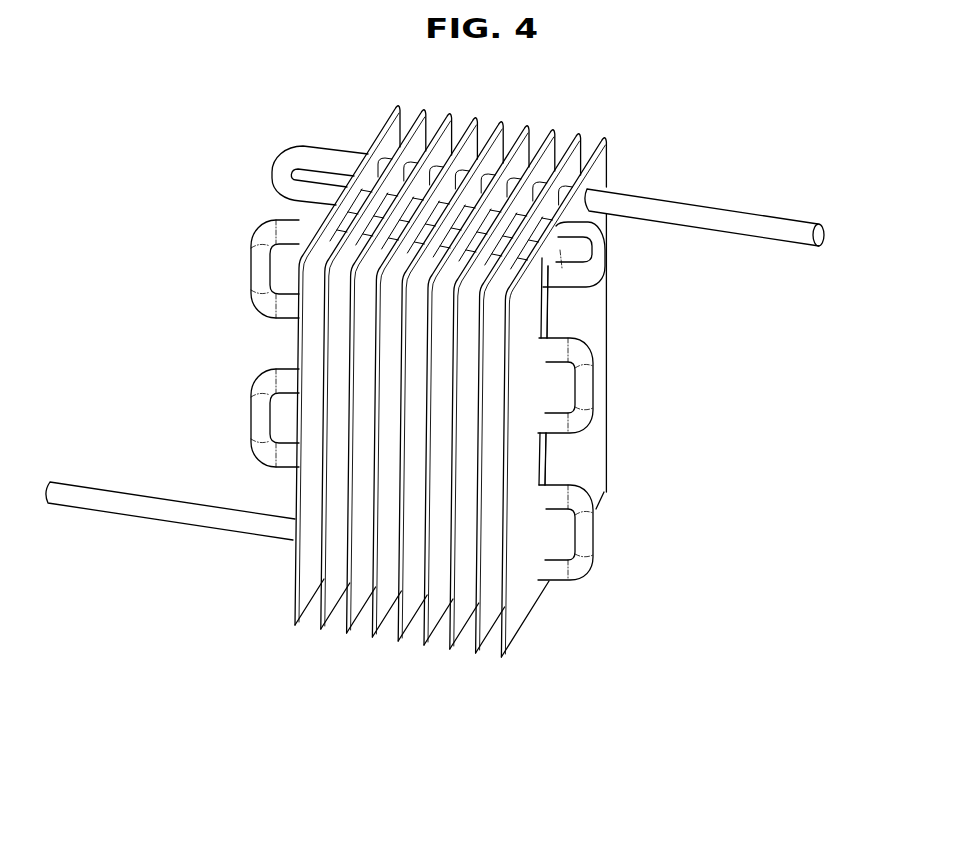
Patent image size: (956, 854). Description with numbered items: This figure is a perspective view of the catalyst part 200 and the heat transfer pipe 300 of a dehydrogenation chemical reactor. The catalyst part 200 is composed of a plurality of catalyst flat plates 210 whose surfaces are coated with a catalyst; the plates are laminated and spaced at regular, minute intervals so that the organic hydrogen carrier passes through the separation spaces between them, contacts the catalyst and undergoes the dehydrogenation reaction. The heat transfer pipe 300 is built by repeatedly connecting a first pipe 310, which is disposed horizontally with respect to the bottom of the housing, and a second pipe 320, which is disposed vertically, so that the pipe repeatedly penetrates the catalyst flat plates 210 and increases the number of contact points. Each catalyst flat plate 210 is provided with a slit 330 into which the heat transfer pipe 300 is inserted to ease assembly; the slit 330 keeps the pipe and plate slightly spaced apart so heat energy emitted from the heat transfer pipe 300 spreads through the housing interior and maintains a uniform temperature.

The catalyst part 200 is at (450, 448).
The catalyst flat plate 210 is at (424, 638).
The heat transfer pipe 300 is at (435, 391).
The first pipe 310 is at (291, 228).
The second pipe 320 is at (258, 263).
The slit 330 is at (565, 250).